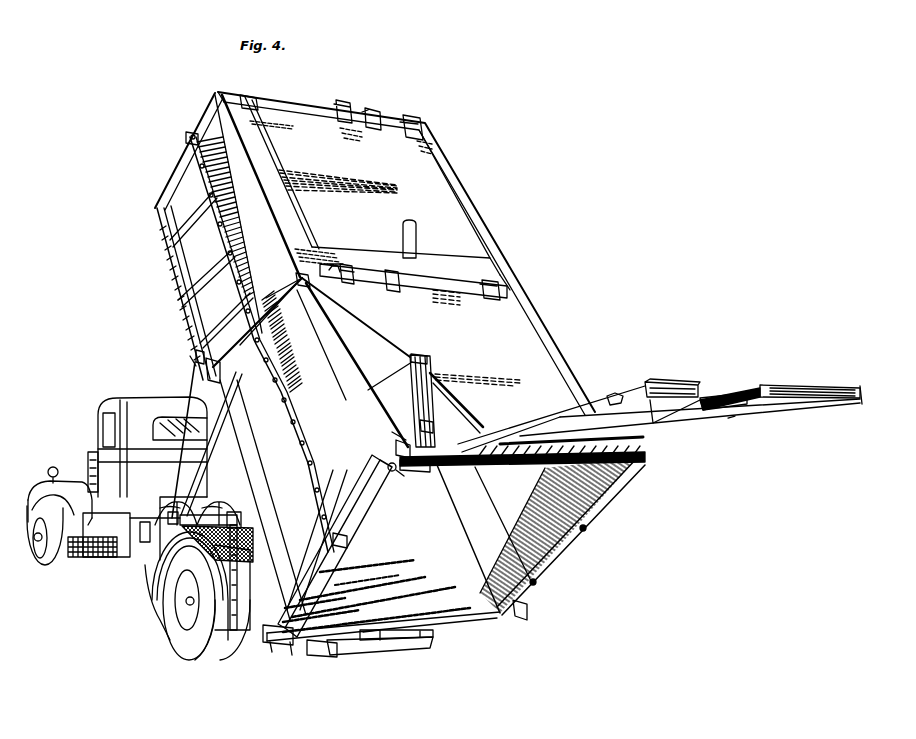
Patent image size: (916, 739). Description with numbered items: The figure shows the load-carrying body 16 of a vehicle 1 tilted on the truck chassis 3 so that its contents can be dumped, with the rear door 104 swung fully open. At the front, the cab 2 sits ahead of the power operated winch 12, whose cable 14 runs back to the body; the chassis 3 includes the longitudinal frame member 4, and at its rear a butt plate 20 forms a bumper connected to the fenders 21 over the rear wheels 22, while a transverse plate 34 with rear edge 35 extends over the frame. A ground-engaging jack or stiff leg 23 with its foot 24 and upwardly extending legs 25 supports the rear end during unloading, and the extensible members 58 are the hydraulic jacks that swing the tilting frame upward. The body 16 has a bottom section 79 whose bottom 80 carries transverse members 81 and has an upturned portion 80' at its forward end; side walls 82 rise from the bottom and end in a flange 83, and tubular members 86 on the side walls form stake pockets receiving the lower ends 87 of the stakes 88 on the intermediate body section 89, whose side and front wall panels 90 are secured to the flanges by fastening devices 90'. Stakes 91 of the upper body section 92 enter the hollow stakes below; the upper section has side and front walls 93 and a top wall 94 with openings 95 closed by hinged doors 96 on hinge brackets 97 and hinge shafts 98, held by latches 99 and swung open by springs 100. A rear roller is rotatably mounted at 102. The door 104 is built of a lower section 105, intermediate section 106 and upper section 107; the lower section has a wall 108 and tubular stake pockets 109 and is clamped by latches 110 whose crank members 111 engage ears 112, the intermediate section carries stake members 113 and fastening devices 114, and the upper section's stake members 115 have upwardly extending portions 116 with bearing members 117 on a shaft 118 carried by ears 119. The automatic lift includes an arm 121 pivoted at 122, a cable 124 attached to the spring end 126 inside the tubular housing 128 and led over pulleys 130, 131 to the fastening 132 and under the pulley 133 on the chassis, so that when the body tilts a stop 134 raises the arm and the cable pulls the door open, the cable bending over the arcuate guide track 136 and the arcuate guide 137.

The vehicle 1 is at (80, 540).
The cab 2 is at (98, 442).
The chassis 3 is at (160, 575).
The longitudinal frame member 4 is at (140, 548).
The power operated winch 12 is at (215, 500).
The cable 14 is at (208, 465).
The load-carrying body 16 is at (192, 131).
The butt plate 20 is at (243, 620).
The fenders 21 is at (200, 600).
The rear wheels 22 is at (168, 600).
The jack or stiff leg 23 is at (335, 655).
The ground-engaging foot 24 is at (413, 647).
The upwardly extending legs 25 is at (433, 634).
The transverse plate 34 is at (237, 565).
The rear edge 35 is at (220, 553).
The extensible members 58 is at (255, 514).
The bottom section 79 is at (164, 272).
The bottom 80 is at (383, 633).
The upturned portion 80' is at (173, 291).
The transverse members 81 is at (190, 362).
The side walls 82 is at (200, 322).
The flange 83 is at (410, 605).
The tubular members 86 is at (275, 405).
The lower ends of stakes 87 is at (330, 533).
The stakes 88 is at (245, 380).
The intermediate body section 89 is at (332, 566).
The side wall and front wall panels 90 is at (537, 535).
The fastening devices 90' is at (202, 249).
The stakes 91 is at (276, 322).
The upper body section 92 is at (377, 507).
The side and front walls 93 is at (430, 122).
The top wall 94 is at (505, 280).
The openings 95 is at (490, 248).
The hinged doors 96 is at (455, 180).
The hinge brackets 97 is at (372, 108).
The hinge shafts 98 is at (460, 288).
The latches 99 is at (408, 222).
The springs 100 is at (336, 103).
The roller mounting 102 is at (272, 650).
The door 104 is at (862, 395).
The lower section 105 is at (780, 396).
The intermediate section 106 is at (730, 416).
The upper section 107 is at (648, 440).
The wall 108 is at (740, 394).
The tubular stake pockets 109 is at (648, 380).
The latches 110 is at (275, 620).
The crank member 111 is at (295, 650).
The ears 112 is at (612, 393).
The stake members 113 is at (512, 420).
The fastening devices 114 is at (692, 408).
The stake members 115 is at (472, 425).
The upwardly extending portions 116 is at (392, 443).
The bearing members 117 is at (415, 472).
The shaft 118 is at (400, 478).
The ears 119 is at (385, 460).
The arm 121 is at (430, 356).
The pivot 122 is at (433, 428).
The cable 124 is at (267, 298).
The spring end 126 is at (495, 468).
The tubular housing 128 is at (595, 439).
The pulley 130 is at (296, 270).
The pulley 131 is at (222, 372).
The cable fastening 132 is at (196, 355).
The pulley 133 is at (172, 510).
The stop 134 is at (368, 388).
The arcuate guide track 136 is at (405, 360).
The arcuate guide 137 is at (390, 430).